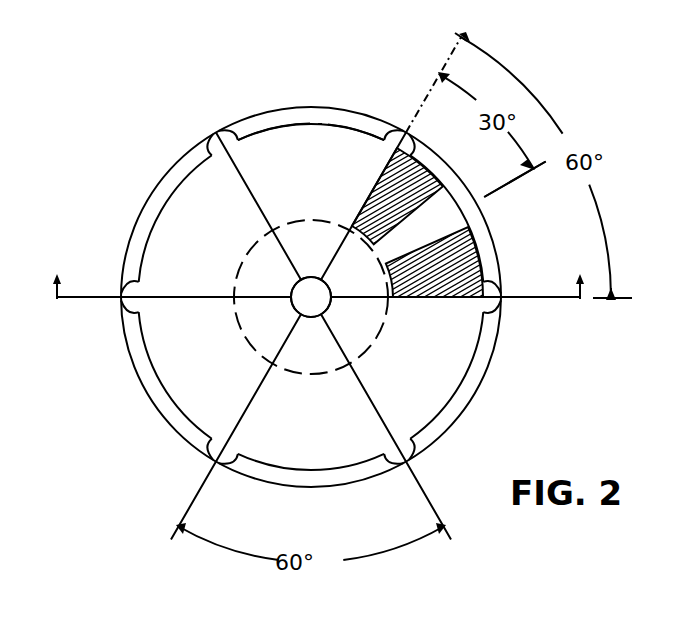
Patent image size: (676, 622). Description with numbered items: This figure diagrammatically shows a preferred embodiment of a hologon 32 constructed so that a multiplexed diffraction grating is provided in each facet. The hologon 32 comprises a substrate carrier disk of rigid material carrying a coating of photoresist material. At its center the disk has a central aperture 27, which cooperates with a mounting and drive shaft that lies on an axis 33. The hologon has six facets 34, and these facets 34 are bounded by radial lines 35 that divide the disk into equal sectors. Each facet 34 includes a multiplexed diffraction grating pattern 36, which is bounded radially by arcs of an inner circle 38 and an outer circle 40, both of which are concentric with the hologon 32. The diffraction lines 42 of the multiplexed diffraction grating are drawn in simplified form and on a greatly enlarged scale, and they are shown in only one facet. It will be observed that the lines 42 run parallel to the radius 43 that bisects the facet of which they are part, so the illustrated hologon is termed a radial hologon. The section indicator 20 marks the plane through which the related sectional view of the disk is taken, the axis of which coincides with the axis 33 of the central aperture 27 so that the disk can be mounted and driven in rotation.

The section line indicator 20 is at (321, 274).
The central aperture 27 is at (323, 300).
The hologon 32 is at (222, 106).
The axis 33 is at (308, 295).
The facets 34 is at (305, 128).
The radial lines 35 is at (212, 134).
The multiplexed diffraction grating pattern 36 is at (420, 213).
The inner circle 38 is at (298, 210).
The outer circle 40 is at (247, 140).
The diffraction lines 42 is at (447, 176).
The radius 43 is at (520, 177).